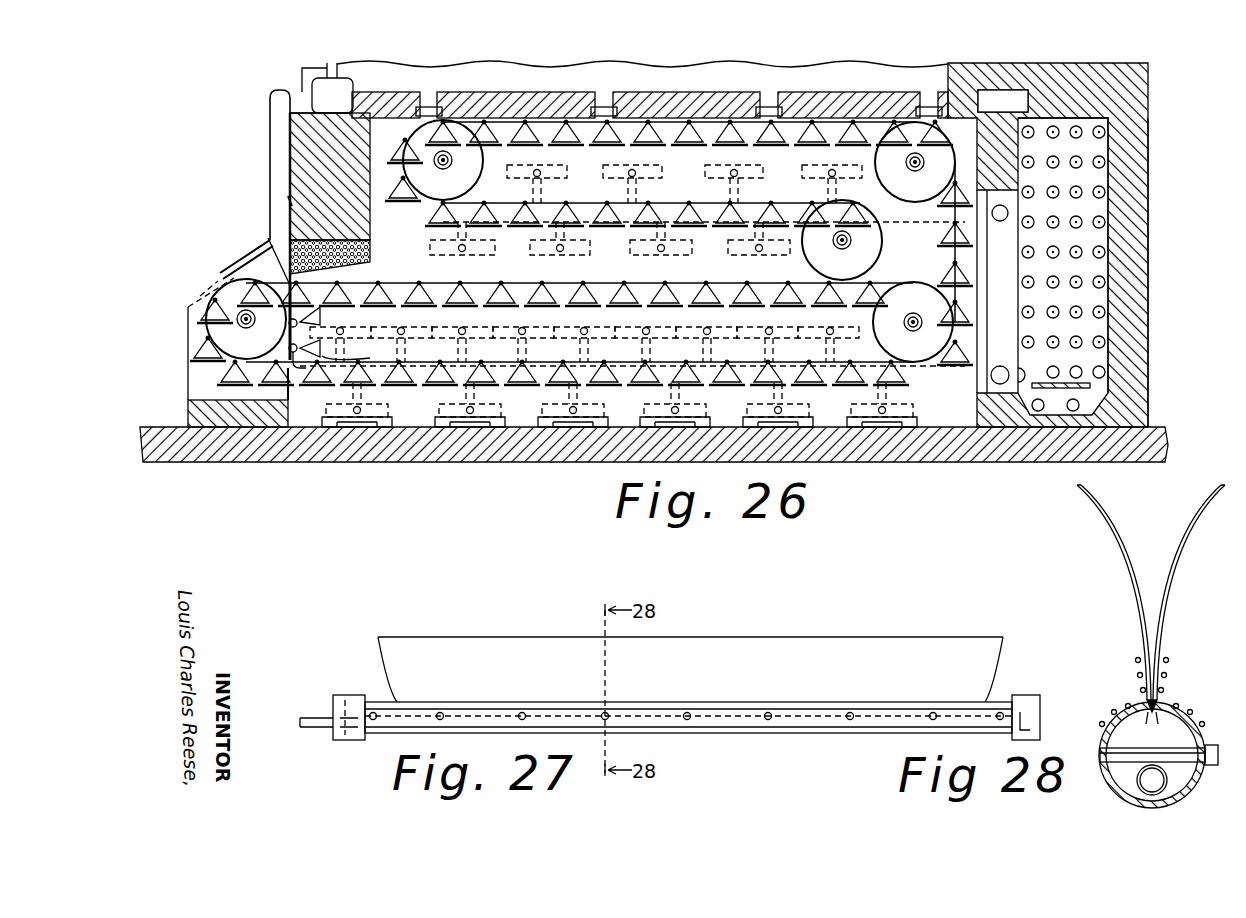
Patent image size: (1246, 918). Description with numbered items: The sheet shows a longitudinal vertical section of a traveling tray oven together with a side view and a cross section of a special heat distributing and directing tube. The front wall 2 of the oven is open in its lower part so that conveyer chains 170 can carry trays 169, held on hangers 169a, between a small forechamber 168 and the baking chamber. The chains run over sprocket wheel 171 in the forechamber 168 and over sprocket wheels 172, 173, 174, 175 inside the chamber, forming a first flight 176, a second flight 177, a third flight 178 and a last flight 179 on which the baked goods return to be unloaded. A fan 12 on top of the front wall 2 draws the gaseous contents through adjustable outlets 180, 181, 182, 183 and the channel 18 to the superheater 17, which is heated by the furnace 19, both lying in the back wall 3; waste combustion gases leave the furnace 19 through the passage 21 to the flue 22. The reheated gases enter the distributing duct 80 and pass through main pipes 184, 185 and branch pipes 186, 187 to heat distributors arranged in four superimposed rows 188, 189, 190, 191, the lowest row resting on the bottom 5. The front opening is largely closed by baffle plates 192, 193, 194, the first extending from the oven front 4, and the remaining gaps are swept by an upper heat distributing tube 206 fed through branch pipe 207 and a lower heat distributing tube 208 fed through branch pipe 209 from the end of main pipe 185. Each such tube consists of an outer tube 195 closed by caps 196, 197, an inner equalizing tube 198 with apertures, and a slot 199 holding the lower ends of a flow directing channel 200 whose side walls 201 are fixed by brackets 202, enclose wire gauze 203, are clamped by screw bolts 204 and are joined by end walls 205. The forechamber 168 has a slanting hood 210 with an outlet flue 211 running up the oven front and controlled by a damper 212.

In FIG. 26, the front wall 2 is at (296, 166).
In FIG. 26, the back wall 3 is at (1148, 183).
In FIG. 26, the oven front 4 is at (843, 80).
In FIG. 26, the bottom 5 is at (830, 427).
In FIG. 26, the fan 12 is at (322, 76).
In FIG. 26, the superheater 17 is at (1100, 162).
In FIG. 26, the channel 18 is at (540, 50).
In FIG. 26, the furnace 19 is at (1100, 243).
In FIG. 26, the passage 21 is at (1022, 118).
In FIG. 26, the flue 22 is at (1003, 101).
In FIG. 26, the distributing duct 80 is at (995, 291).
In FIG. 26, the forechamber 168 is at (190, 337).
In FIG. 26, the trays 169 is at (200, 352).
In FIG. 26, the hangers 169a is at (202, 352).
In FIG. 26, the conveyer chains 170 is at (292, 264).
In FIG. 26, the sprocket wheel 171 is at (248, 319).
In FIG. 26, the sprocket wheel 172 is at (842, 240).
In FIG. 26, the sprocket wheel 173 is at (443, 160).
In FIG. 26, the sprocket wheel 174 is at (915, 162).
In FIG. 26, the sprocket wheel 175 is at (913, 322).
In FIG. 26, the first flight 176 is at (590, 284).
In FIG. 26, the second flight 177 is at (682, 203).
In FIG. 26, the third flight 178 is at (652, 135).
In FIG. 26, the last flight 179 is at (591, 360).
In FIG. 26, the adjustable outlet 180 is at (428, 100).
In FIG. 26, the adjustable outlet 181 is at (606, 100).
In FIG. 26, the adjustable outlet 182 is at (770, 100).
In FIG. 26, the adjustable outlet 183 is at (930, 100).
In FIG. 26, the main pipe 184 is at (1000, 221).
In FIG. 26, the main pipe 185 is at (1000, 366).
In FIG. 26, the branch pipe 186 is at (662, 240).
In FIG. 26, the branch pipe 187 is at (672, 404).
In FIG. 26, the row of heat distributors 188 is at (584, 334).
In FIG. 26, the row of heat distributors 189 is at (495, 250).
In FIG. 26, the row of heat distributors 190 is at (590, 183).
In FIG. 26, the row of heat distributors 191 is at (540, 404).
In FIG. 26, the baffle plate 192 is at (268, 238).
In FIG. 26, the baffle plate 193 is at (288, 344).
In FIG. 26, the baffle plate 194 is at (290, 397).
In FIG. 27, the outer tube 195 is at (740, 734).
In FIG. 28, the outer tube 195 is at (1112, 793).
In FIG. 27, the cap 196 is at (338, 695).
In FIG. 27, the cap 197 is at (1036, 712).
In FIG. 27, the inner equalizing tube 198 is at (314, 728).
In FIG. 28, the inner equalizing tube 198 is at (1176, 782).
In FIG. 28, the slot 199 is at (1146, 712).
In FIG. 27, the flow directing channel 200 is at (784, 637).
In FIG. 28, the flow directing channel 200 is at (1151, 592).
In FIG. 28, the side walls 201 is at (1097, 518).
In FIG. 28, the brackets 202 is at (1136, 664).
In FIG. 28, the wire gauze 203 is at (1168, 686).
In FIG. 27, the screw bolts 204 is at (851, 721).
In FIG. 28, the screw bolts 204 is at (1218, 752).
In FIG. 27, the end walls 205 is at (382, 653).
In FIG. 26, the upper heat distributing tube 206 is at (322, 316).
In FIG. 26, the branch pipe 207 is at (322, 348).
In FIG. 26, the lower heat distributing tube 208 is at (364, 349).
In FIG. 26, the branch pipe 209 is at (292, 372).
In FIG. 26, the hood 210 is at (240, 264).
In FIG. 26, the outlet flue 211 is at (272, 137).
In FIG. 26, the damper 212 is at (286, 199).